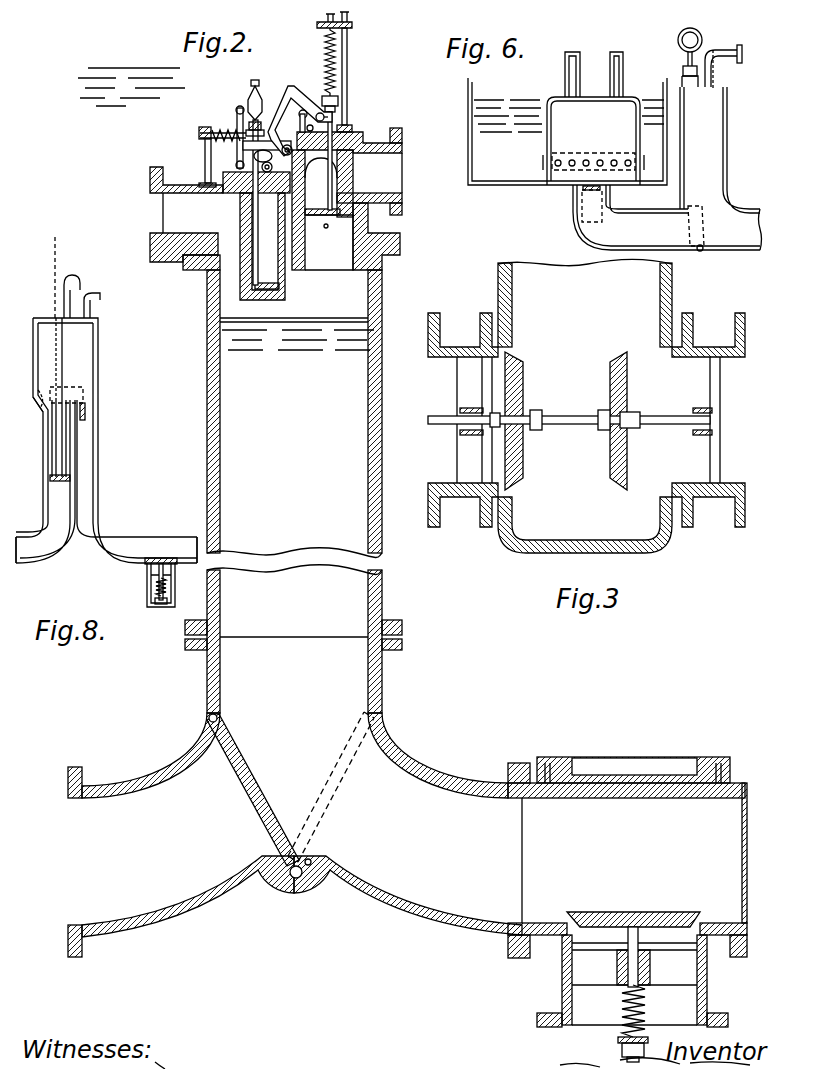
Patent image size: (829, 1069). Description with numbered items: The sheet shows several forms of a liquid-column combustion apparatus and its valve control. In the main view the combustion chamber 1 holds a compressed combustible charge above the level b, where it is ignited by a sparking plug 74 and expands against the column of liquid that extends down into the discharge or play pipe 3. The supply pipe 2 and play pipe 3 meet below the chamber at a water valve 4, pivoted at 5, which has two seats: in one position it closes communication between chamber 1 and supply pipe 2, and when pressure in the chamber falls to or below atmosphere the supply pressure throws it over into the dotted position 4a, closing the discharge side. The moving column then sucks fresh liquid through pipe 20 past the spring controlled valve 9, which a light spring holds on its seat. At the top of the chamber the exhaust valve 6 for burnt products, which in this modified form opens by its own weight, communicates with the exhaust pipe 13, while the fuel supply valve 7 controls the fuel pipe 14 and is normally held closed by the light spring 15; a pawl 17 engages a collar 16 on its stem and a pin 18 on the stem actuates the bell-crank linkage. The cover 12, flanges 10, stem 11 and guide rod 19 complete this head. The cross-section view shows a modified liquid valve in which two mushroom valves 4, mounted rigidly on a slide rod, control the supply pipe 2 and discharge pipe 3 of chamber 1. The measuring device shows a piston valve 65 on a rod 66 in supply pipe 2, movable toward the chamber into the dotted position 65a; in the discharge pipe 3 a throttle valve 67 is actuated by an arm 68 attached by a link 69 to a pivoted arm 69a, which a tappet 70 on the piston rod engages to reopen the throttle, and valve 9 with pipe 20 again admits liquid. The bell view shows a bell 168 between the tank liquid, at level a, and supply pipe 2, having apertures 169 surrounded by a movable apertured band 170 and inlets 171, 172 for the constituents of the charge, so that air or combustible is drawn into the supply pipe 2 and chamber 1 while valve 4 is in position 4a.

In FIG. 3, the combustion chamber 1 is at (585, 407).
In FIG. 6, the combustion chamber 1 is at (719, 120).
In FIG. 2, the supply pipe 2 is at (181, 835).
In FIG. 3, the supply pipe 2 is at (463, 420).
In FIG. 6, the supply pipe 2 is at (612, 208).
In FIG. 8, the supply pipe 2 is at (33, 562).
In FIG. 2, the discharge or play pipe 3 is at (520, 835).
In FIG. 3, the discharge or play pipe 3 is at (708, 420).
In FIG. 6, the discharge or play pipe 3 is at (731, 229).
In FIG. 8, the discharge or play pipe 3 is at (157, 550).
In FIG. 2, the water valve 4 is at (250, 774).
In FIG. 3, the water valve 4 is at (606, 369).
In FIG. 6, the water valve 4 is at (690, 225).
In FIG. 2, the open position of valve 4a is at (346, 750).
In FIG. 2, the pivot 5 is at (322, 853).
In FIG. 2, the exhaust valve 6 is at (242, 271).
In FIG. 2, the fuel supply valve 7 is at (322, 197).
In FIG. 2, the sparking plug 74 is at (325, 239).
In FIG. 2, the spring controlled valve 9 is at (608, 916).
In FIG. 8, the spring controlled valve 9 is at (168, 560).
In FIG. 2, the flange 10 is at (182, 248).
In FIG. 2, the valve stem 11 is at (250, 214).
In FIG. 2, the cover 12 is at (360, 135).
In FIG. 2, the exhaust pipe 13 is at (186, 214).
In FIG. 2, the fuel pipe 14 is at (400, 177).
In FIG. 2, the spring 15 is at (326, 62).
In FIG. 2, the collar 16 is at (340, 96).
In FIG. 2, the pawl 17 is at (306, 110).
In FIG. 2, the pin 18 is at (334, 110).
In FIG. 2, the guide rod 19 is at (348, 50).
In FIG. 2, the pipe 20 is at (632, 994).
In FIG. 8, the pipe 20 is at (146, 585).
In FIG. 8, the piston valve 65 is at (46, 505).
In FIG. 8, the uppermost position of piston valve 65a is at (46, 428).
In FIG. 8, the rod 66 is at (55, 476).
In FIG. 8, the throttle valve 67 is at (87, 415).
In FIG. 8, the arm 68 is at (92, 399).
In FIG. 8, the link 69 is at (70, 398).
In FIG. 8, the arm 69a is at (45, 402).
In FIG. 8, the tappet 70 is at (60, 418).
In FIG. 6, the bell 168 is at (593, 141).
In FIG. 6, the apertures 169 is at (628, 162).
In FIG. 6, the movable band 170 is at (546, 162).
In FIG. 6, the inlet 171 is at (565, 67).
In FIG. 6, the inlet 172 is at (610, 63).
In FIG. 2, the liquid level in tank a is at (131, 78).
In FIG. 2, the liquid level in combustion chamber b is at (297, 325).